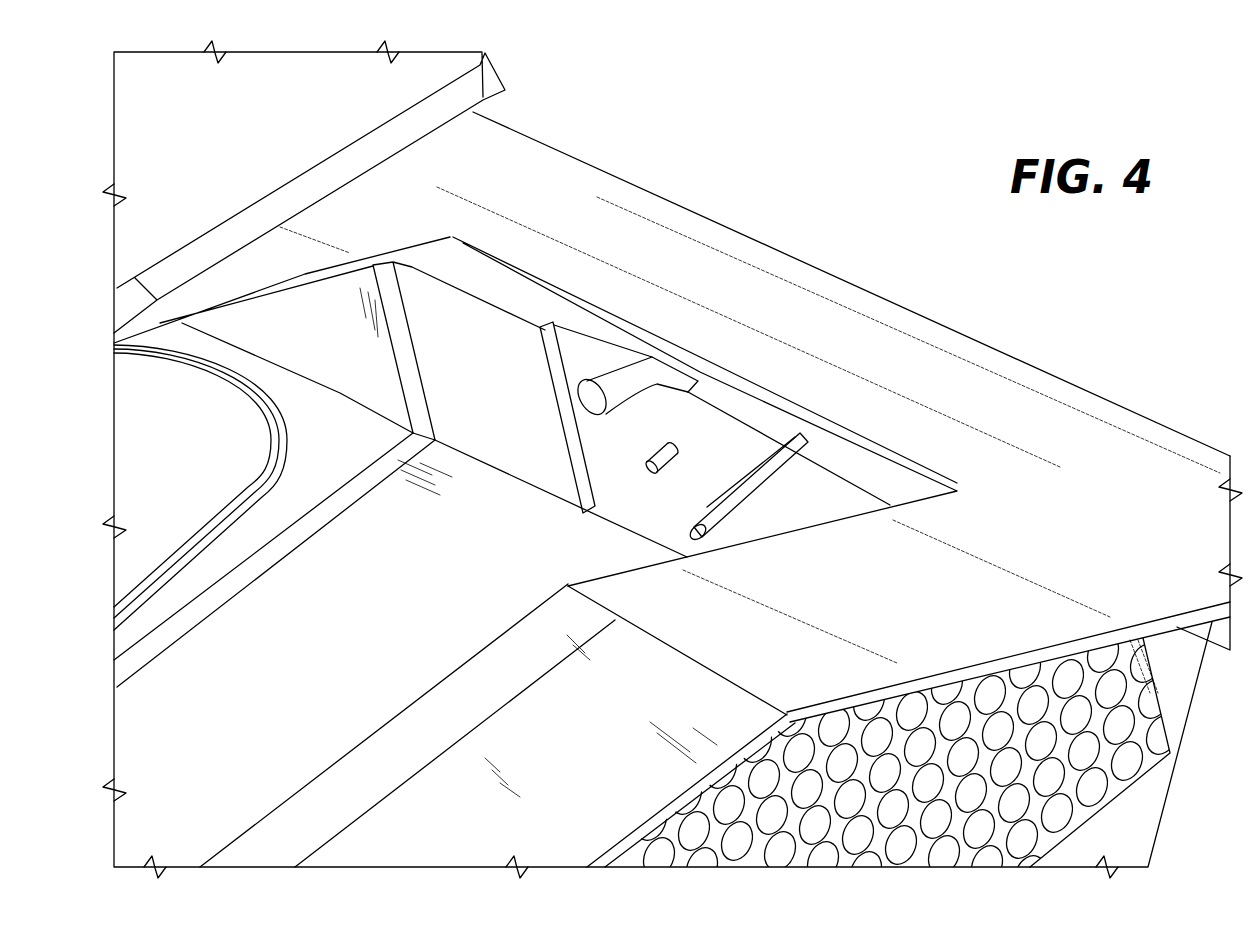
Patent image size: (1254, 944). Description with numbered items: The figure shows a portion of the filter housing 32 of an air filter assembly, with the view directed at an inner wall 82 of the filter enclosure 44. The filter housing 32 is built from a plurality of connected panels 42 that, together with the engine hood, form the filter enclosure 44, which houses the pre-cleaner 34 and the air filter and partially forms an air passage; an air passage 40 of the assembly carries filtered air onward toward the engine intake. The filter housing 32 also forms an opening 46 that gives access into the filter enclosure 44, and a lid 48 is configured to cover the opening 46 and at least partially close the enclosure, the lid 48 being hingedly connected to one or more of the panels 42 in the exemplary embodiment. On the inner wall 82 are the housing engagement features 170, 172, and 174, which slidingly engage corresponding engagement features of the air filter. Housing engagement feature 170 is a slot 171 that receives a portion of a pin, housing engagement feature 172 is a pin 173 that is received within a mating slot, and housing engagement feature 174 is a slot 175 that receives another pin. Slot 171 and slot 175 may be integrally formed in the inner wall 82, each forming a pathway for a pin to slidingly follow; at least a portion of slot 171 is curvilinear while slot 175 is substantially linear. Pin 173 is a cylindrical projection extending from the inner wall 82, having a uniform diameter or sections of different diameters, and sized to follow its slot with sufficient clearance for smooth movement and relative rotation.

The filter housing 32 is at (848, 297).
The pre-cleaner 34 is at (1125, 778).
The air passage 40 is at (200, 487).
The panels 42 is at (718, 660).
The filter enclosure 44 is at (493, 376).
The opening 46 is at (877, 486).
The lid 48 is at (440, 73).
The inner wall 82 is at (578, 417).
The housing engagement feature 170 is at (659, 351).
The slot 171 is at (643, 393).
The housing engagement feature 172 is at (668, 466).
The pin 173 is at (673, 449).
The housing engagement feature 174 is at (771, 481).
The slot 175 is at (732, 495).